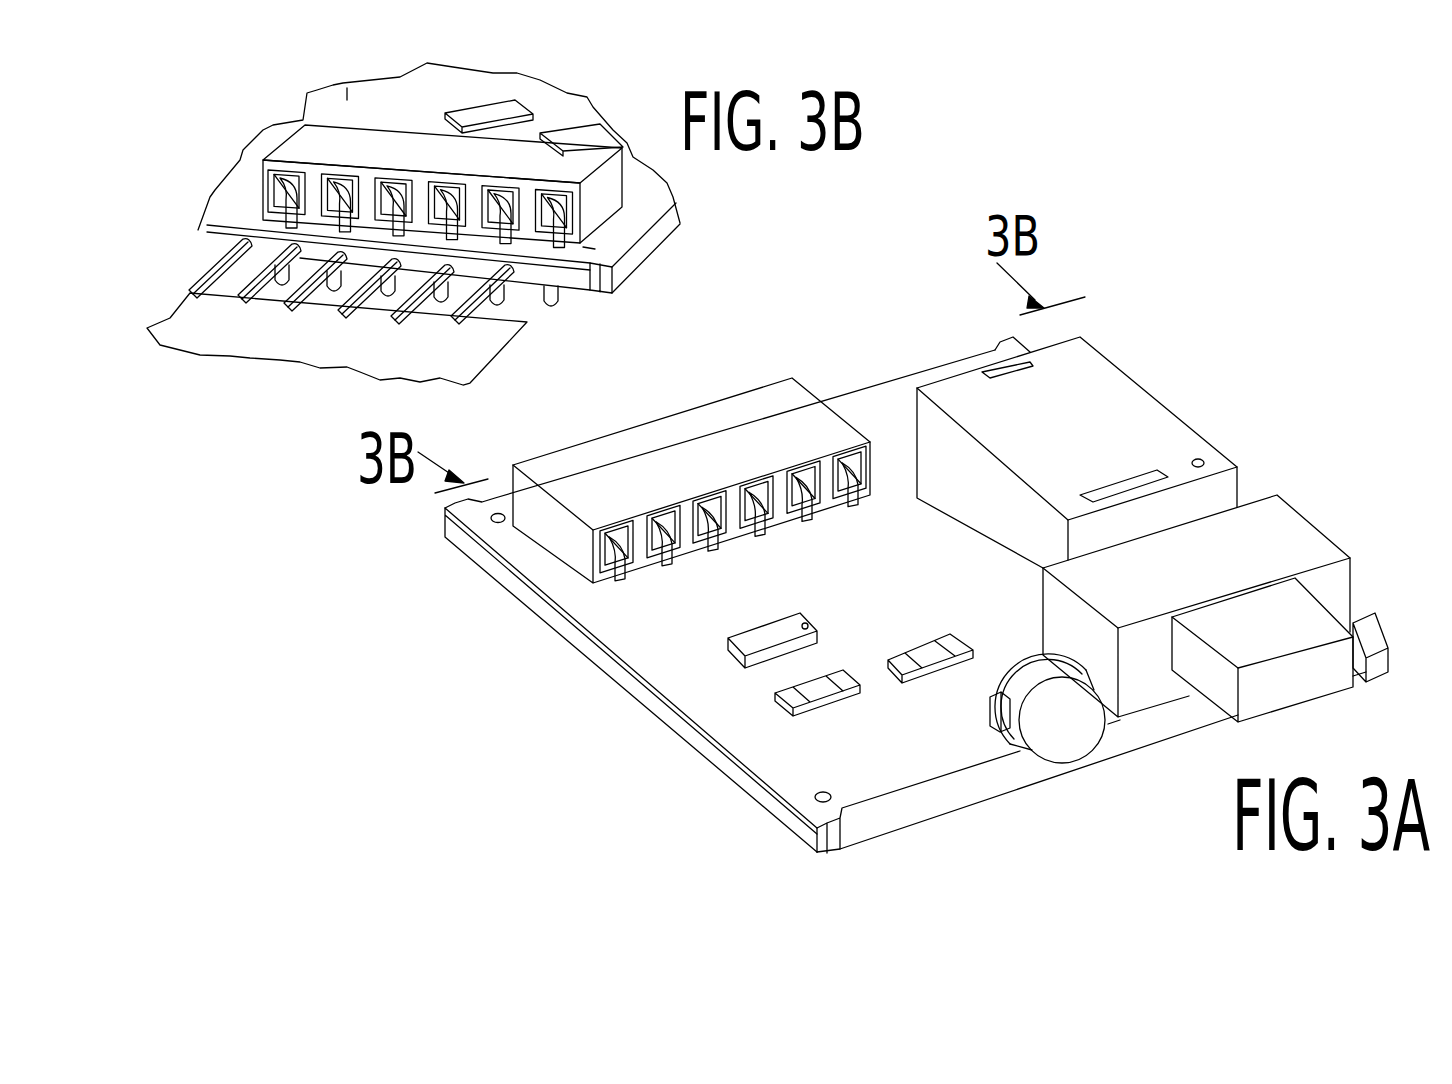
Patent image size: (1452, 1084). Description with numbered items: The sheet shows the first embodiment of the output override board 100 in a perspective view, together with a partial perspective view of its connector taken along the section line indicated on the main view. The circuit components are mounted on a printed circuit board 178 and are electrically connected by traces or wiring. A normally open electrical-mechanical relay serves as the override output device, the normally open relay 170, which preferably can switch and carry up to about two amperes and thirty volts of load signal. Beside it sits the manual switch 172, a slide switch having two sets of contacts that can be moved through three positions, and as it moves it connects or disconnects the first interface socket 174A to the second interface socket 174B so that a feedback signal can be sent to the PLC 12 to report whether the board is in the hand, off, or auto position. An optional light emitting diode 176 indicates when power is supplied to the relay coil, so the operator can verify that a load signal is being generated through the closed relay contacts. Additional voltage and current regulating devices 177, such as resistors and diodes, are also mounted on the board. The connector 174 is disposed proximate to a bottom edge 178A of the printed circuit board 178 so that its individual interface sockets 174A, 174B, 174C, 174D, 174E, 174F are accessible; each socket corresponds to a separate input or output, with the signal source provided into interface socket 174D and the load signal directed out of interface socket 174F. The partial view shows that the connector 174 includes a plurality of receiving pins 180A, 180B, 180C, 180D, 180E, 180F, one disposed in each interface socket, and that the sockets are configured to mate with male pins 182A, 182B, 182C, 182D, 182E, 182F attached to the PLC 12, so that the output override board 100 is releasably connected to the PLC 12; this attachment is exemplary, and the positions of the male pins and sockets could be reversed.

In FIG. 3B, the PLC 12 is at (240, 343).
In FIG. 3A, the output override board 100 is at (645, 732).
In FIG. 3B, the output override board 100 is at (664, 234).
In FIG. 3A, the normally open relay 170 is at (1082, 437).
In FIG. 3A, the manual switch 172 is at (1250, 565).
In FIG. 3A, the connector 174 is at (718, 469).
In FIG. 3B, the connector 174 is at (448, 165).
In FIG. 3A, the first interface socket 174A is at (622, 579).
In FIG. 3B, the first interface socket 174A is at (277, 193).
In FIG. 3A, the second interface socket 174B is at (676, 557).
In FIG. 3B, the second interface socket 174B is at (330, 194).
In FIG. 3A, the interface socket 174C is at (720, 543).
In FIG. 3B, the interface socket 174C is at (378, 180).
In FIG. 3A, the interface socket 174D is at (756, 506).
In FIG. 3B, the interface socket 174D is at (430, 185).
In FIG. 3A, the interface socket 174E is at (808, 511).
In FIG. 3B, the interface socket 174E is at (500, 197).
In FIG. 3A, the interface socket 174F is at (850, 497).
In FIG. 3B, the interface socket 174F is at (566, 194).
In FIG. 3A, the light emitting diode 176 is at (1070, 745).
In FIG. 3A, the voltage and current regulating devices 177 is at (790, 688).
In FIG. 3A, the printed circuit board 178 is at (1374, 630).
In FIG. 3A, the bottom edge 178A is at (916, 382).
In FIG. 3B, the receiving pin 180A is at (343, 213).
In FIG. 3B, the receiving pin 180B is at (346, 233).
In FIG. 3B, the receiving pin 180C is at (400, 237).
In FIG. 3B, the receiving pin 180D is at (453, 241).
In FIG. 3B, the receiving pin 180E is at (507, 245).
In FIG. 3B, the receiving pin 180F is at (561, 250).
In FIG. 3B, the male pin 182A is at (212, 270).
In FIG. 3B, the male pin 182B is at (233, 298).
In FIG. 3B, the male pin 182C is at (293, 290).
In FIG. 3B, the male pin 182D is at (374, 297).
In FIG. 3B, the male pin 182E is at (428, 290).
In FIG. 3B, the male pin 182F is at (477, 300).